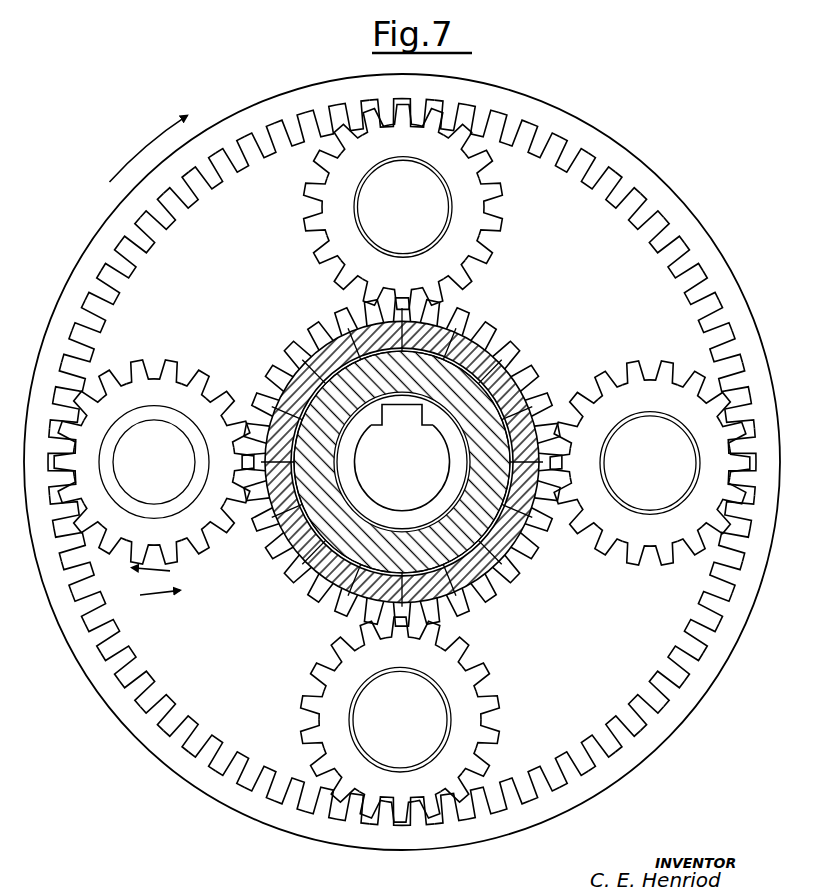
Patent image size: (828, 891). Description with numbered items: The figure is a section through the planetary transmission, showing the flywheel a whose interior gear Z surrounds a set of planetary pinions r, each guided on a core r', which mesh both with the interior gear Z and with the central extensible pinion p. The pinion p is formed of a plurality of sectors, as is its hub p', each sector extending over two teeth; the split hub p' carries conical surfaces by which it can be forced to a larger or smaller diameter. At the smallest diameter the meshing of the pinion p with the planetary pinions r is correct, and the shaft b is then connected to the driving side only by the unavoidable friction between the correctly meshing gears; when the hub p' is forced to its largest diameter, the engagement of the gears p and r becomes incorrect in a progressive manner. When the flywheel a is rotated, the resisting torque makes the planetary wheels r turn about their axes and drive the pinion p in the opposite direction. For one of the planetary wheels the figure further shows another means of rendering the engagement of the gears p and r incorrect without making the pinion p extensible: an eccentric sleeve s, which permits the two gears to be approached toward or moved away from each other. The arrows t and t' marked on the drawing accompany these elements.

The ring casing a is at (402, 462).
The internal teeth of ring gear Z is at (402, 461).
The internally toothed ring gear b is at (402, 461).
The sun pinion p is at (402, 462).
The hub of sun pinion p' is at (404, 449).
The planet gear r is at (401, 463).
The planet gear stud bore r' is at (518, 464).
The planet gear stud s is at (149, 464).
The direction of rotation arrow t is at (149, 353).
The direction of rotation arrow of planet t' is at (160, 597).